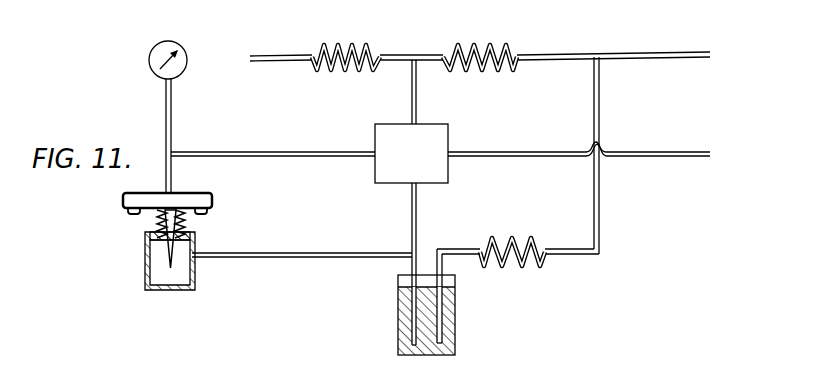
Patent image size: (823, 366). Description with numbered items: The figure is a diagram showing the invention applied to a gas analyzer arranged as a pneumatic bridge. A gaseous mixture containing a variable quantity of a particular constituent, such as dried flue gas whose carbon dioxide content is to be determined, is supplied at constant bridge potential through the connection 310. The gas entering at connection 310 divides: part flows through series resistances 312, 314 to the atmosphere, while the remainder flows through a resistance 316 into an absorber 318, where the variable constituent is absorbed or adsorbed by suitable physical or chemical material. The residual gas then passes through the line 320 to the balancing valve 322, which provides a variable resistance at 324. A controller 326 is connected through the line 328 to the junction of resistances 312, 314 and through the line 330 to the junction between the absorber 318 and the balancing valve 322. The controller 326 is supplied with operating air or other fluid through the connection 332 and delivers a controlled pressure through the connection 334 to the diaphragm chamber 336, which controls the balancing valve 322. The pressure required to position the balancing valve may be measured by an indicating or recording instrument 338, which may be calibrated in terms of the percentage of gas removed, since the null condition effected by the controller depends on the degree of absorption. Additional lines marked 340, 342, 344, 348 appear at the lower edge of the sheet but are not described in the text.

The connection 310 is at (650, 53).
The series resistance 312 is at (490, 38).
The series resistance 314 is at (357, 38).
The resistance 316 is at (514, 250).
The absorber 318 is at (404, 326).
The line 320 is at (292, 252).
The balancing valve 322 is at (197, 271).
The variable resistance 324 is at (163, 245).
The controller 326 is at (445, 176).
The line 328 is at (416, 102).
The line 330 is at (417, 224).
The connection 332 is at (658, 148).
The connection 334 is at (297, 142).
The diaphragm chamber 336 is at (137, 204).
The indicating or recording instrument 338 is at (149, 60).
The line 340 is at (660, 361).
The line 342 is at (492, 361).
The line 344 is at (365, 361).
The line 348 is at (172, 361).